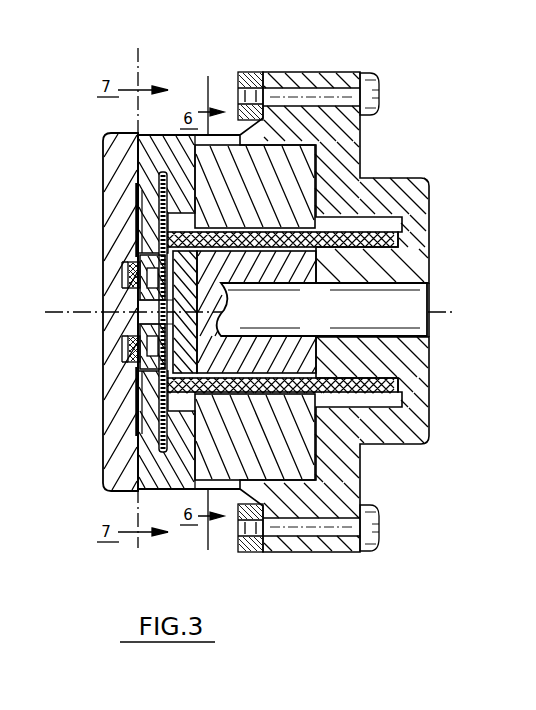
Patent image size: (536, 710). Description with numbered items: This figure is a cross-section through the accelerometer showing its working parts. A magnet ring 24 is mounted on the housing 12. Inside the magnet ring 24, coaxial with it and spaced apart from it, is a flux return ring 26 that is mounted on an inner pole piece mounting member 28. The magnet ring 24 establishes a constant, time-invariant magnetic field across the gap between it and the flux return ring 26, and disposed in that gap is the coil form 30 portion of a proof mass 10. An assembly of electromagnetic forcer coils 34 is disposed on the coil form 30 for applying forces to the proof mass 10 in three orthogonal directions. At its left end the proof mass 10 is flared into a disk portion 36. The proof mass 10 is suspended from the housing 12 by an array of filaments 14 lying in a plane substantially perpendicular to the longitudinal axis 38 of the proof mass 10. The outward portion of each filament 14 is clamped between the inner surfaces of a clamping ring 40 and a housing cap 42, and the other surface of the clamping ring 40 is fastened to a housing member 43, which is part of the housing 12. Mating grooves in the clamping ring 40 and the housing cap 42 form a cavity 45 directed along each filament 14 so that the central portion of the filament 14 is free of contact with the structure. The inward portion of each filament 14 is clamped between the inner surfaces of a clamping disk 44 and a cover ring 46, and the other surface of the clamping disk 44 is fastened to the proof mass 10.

The proof mass 10 is at (386, 232).
The housing 12 is at (380, 176).
The filaments 14 is at (135, 200).
The magnet ring 24 is at (270, 198).
The flux return ring 26 is at (272, 277).
The inner pole piece mounting member 28 is at (300, 312).
The coil form 30 is at (382, 384).
The electromagnetic forcer coils 34 is at (258, 393).
The disk portion 36 is at (172, 299).
The longitudinal axis 38 is at (82, 313).
The clamping ring 40 is at (117, 141).
The housing cap 42 is at (120, 181).
The housing member 43 is at (168, 136).
The clamping disk 44 is at (140, 290).
The cavity 45 is at (134, 228).
The cover ring 46 is at (134, 352).